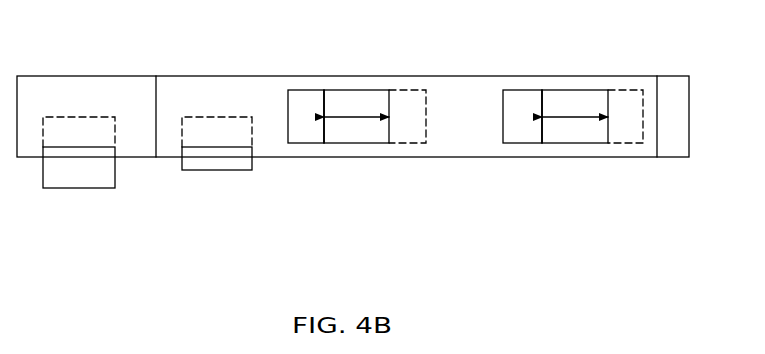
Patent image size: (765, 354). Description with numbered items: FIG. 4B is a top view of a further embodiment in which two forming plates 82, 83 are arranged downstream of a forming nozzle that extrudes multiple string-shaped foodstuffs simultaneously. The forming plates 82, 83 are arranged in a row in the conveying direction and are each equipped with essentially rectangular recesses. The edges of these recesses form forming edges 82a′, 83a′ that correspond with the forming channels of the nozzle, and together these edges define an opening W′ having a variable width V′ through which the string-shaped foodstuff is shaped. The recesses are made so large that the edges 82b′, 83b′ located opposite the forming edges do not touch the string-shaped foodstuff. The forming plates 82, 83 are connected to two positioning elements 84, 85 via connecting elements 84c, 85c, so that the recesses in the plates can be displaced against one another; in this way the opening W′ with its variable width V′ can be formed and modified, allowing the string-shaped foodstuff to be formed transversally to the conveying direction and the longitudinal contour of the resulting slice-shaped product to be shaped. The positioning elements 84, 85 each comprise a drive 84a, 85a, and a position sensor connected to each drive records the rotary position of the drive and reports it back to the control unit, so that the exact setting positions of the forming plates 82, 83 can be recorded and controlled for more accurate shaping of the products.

The forming plate 82 is at (692, 155).
The forming plate 83 is at (651, 86).
The positioning element 84 is at (208, 137).
The drive 84a is at (200, 127).
The connecting element 84c is at (230, 162).
The positioning element 85 is at (66, 147).
The drive 85a is at (62, 125).
The connecting element 85c is at (93, 180).
The forming edge 82a′ is at (550, 133).
The opposite edge 82b′ is at (647, 135).
The forming edge 83a′ is at (610, 130).
The opposite edge 83b′ is at (508, 130).
The variable width V′ is at (566, 112).
The opening W′ is at (587, 100).